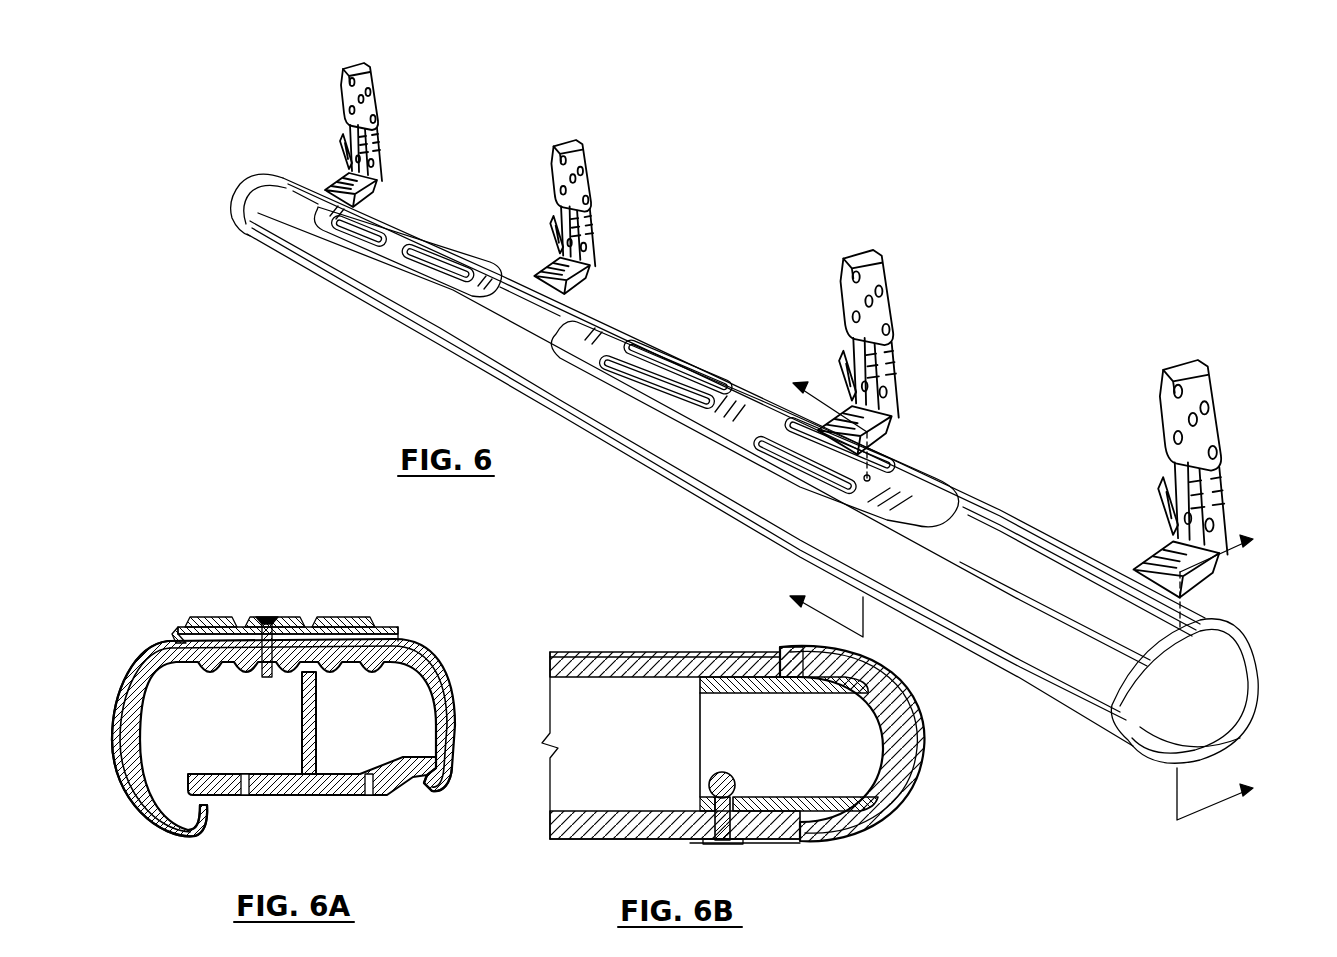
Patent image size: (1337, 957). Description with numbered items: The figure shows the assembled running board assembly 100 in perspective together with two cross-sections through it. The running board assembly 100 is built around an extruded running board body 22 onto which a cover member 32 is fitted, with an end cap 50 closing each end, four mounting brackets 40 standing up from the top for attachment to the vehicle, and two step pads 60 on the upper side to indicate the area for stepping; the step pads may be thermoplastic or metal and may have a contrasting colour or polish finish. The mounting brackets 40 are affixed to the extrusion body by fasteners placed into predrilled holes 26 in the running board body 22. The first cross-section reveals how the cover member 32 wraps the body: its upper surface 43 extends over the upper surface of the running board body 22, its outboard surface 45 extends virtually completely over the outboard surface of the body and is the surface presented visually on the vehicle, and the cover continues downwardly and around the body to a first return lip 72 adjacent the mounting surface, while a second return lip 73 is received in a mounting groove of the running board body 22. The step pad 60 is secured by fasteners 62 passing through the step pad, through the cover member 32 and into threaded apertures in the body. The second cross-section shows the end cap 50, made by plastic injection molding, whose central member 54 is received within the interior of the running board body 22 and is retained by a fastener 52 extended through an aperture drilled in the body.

In FIG. 6, the running board assembly 100 is at (1026, 331).
In FIG. 6, the mounting bracket 40 is at (375, 114).
In FIG. 6, the end cap 50 is at (236, 185).
In FIG. 6B, the end cap 50 is at (926, 752).
In FIG. 6, the step pad 60 is at (413, 231).
In FIG. 6A, the step pad 60 is at (347, 623).
In FIG. 6, the cover member 32 is at (1021, 532).
In FIG. 6A, the cover member 32 is at (402, 644).
In FIG. 6B, the cover member 32 is at (590, 650).
In FIG. 6A, the upper surface 43 is at (162, 642).
In FIG. 6A, the fastener 62 is at (262, 618).
In FIG. 6A, the outboard surface 45 is at (123, 806).
In FIG. 6A, the first return lip 72 is at (207, 813).
In FIG. 6A, the predrilled hole 26 is at (243, 795).
In FIG. 6A, the running board body 22 is at (400, 788).
In FIG. 6B, the running board body 22 is at (648, 842).
In FIG. 6A, the second return lip 73 is at (430, 787).
In FIG. 6B, the central member 54 is at (827, 695).
In FIG. 6B, the fastener 52 is at (730, 843).